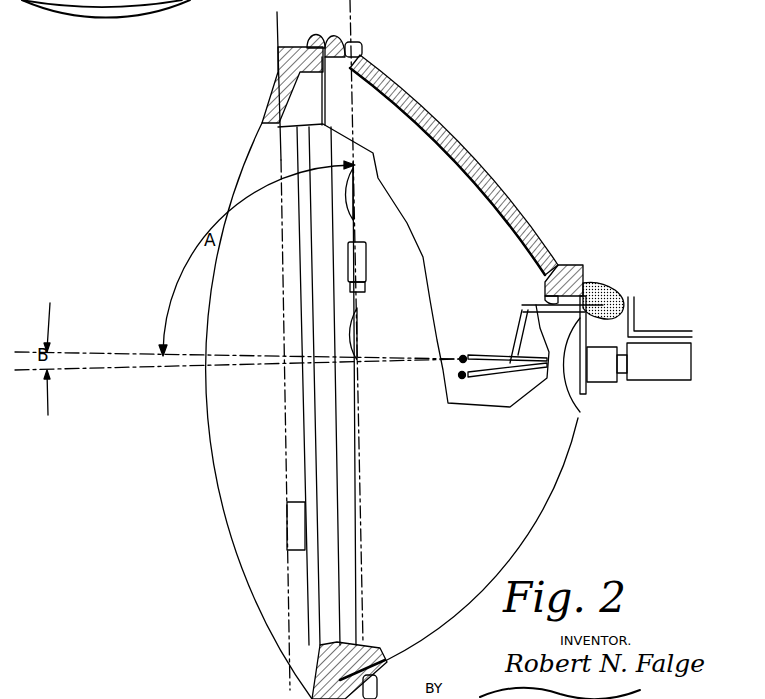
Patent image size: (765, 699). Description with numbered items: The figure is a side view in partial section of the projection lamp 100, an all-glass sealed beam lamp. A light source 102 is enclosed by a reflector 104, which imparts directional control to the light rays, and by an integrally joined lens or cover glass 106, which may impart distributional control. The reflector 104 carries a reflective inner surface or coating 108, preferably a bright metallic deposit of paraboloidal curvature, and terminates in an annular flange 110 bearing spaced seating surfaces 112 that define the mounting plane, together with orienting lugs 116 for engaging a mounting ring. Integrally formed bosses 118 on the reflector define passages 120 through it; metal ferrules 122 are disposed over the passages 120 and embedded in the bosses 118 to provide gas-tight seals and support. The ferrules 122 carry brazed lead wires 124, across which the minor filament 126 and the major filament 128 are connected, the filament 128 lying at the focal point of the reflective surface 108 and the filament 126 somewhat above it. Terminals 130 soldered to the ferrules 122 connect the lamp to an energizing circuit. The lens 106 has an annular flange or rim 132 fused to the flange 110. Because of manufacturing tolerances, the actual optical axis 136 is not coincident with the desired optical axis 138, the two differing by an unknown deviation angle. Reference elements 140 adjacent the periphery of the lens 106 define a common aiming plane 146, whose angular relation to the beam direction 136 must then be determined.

The projection lamp 100 is at (391, 75).
The light source 102 is at (502, 353).
The reflector 104 is at (487, 163).
The lens or cover glass 106 is at (242, 165).
The reflective inner surface or coating 108 is at (497, 207).
The annular flange 110 is at (329, 33).
The seating surfaces 112 is at (355, 203).
The orienting lugs 116 is at (367, 262).
The bosses 118 is at (573, 272).
The passages 120 is at (545, 299).
The metal ferrules 122 is at (606, 288).
The lead wires 124 is at (508, 356).
The filament (minor) 126 is at (463, 356).
The filament (major) 128 is at (462, 378).
The terminals 130 is at (636, 322).
The annular flange or rim 132 is at (316, 38).
The actual optical axis 136 is at (72, 372).
The desired optical axis 138 is at (53, 350).
The reference elements 140 is at (278, 60).
The aiming plane 146 is at (278, 32).